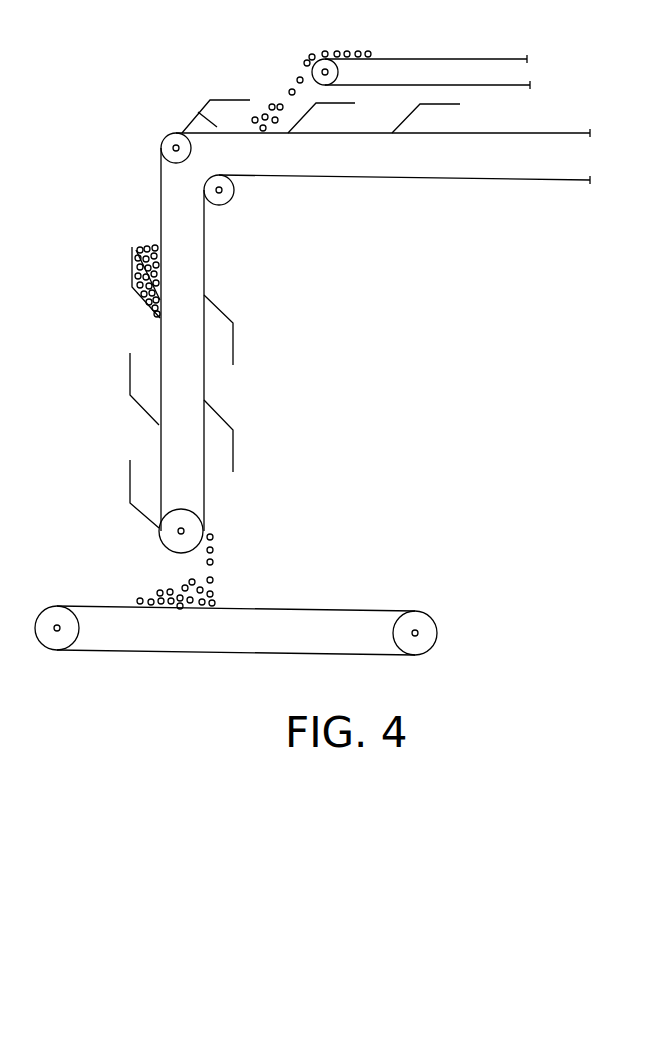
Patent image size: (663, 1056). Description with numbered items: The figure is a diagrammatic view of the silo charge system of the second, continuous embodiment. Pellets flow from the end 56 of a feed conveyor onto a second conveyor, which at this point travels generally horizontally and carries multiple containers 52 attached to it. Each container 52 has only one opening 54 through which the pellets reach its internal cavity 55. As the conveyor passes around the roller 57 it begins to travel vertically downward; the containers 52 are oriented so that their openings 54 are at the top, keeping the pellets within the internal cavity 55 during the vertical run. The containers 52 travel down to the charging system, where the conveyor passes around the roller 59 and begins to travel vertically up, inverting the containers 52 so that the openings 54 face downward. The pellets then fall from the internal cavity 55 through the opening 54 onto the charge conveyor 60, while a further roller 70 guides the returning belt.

The container 52 is at (245, 97).
The opening 54 is at (242, 115).
The internal cavity 55 is at (198, 112).
The end of conveyor 56 is at (313, 60).
The roller 57 is at (171, 137).
The roller 59 is at (186, 525).
The charge conveyor 60 is at (358, 608).
The return pulley 70 is at (224, 198).